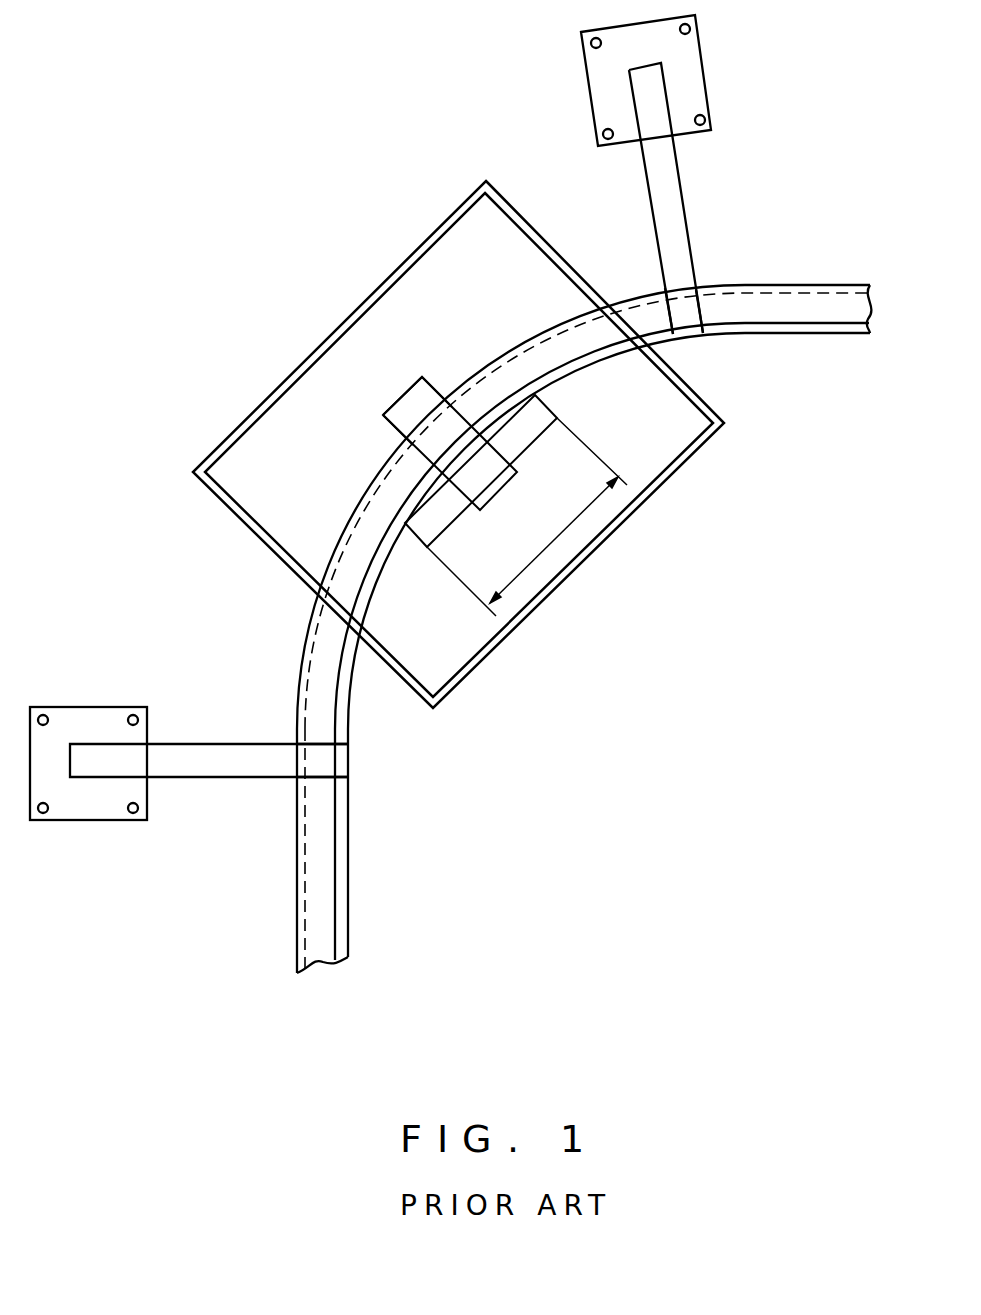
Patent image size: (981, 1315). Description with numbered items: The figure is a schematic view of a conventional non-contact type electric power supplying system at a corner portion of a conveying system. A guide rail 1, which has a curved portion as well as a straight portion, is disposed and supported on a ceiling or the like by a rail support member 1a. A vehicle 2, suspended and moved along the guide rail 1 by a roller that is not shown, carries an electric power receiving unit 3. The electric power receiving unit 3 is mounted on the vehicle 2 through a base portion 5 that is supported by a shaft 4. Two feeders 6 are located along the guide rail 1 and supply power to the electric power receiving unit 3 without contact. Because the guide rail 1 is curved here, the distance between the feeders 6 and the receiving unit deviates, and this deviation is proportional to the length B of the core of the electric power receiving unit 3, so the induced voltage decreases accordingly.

The guide rail 1 is at (802, 313).
The rail support member 1a is at (688, 227).
The vehicle 2 is at (607, 553).
The electric power receiving unit 3 is at (518, 442).
The shaft 4 is at (507, 468).
The base portion 5 is at (392, 423).
The feeders 6 is at (742, 329).
The length of the core of the electric power receiving unit B is at (578, 518).